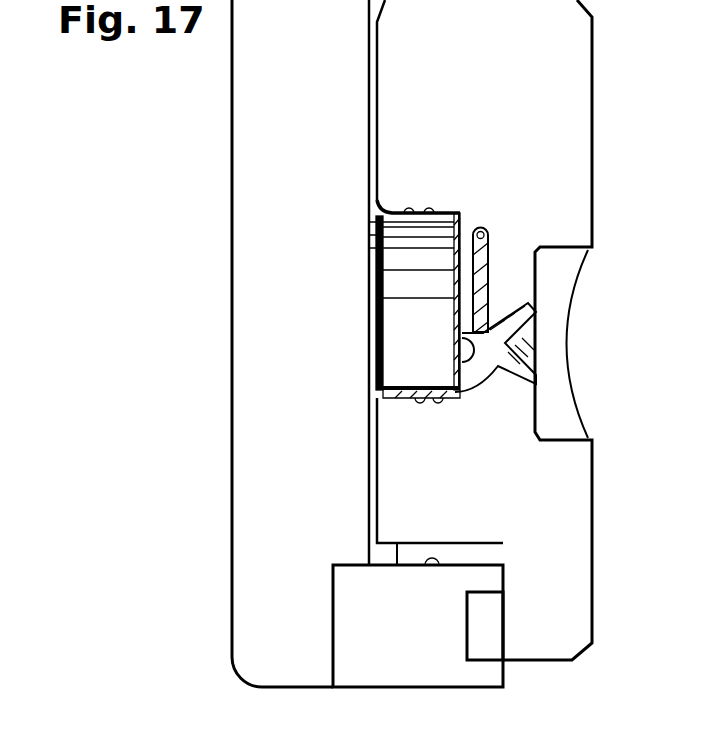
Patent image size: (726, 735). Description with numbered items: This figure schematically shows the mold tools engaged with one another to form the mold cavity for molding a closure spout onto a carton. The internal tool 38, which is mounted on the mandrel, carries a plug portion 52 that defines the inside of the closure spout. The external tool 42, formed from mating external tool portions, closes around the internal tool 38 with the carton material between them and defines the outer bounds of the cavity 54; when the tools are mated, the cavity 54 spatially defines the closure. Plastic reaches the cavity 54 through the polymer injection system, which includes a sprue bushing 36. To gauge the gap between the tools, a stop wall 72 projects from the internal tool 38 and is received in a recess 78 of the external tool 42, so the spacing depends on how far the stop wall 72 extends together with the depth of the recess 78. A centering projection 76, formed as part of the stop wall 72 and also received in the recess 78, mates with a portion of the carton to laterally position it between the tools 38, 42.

The sprue bushing 36 is at (520, 346).
The internal tool 38 is at (244, 240).
The external tool 42 is at (572, 86).
The plug portion 52 is at (460, 216).
The cavity 54 is at (450, 392).
The stop wall 72 is at (432, 565).
The centering projection 76 is at (385, 557).
The recess 78 is at (497, 548).